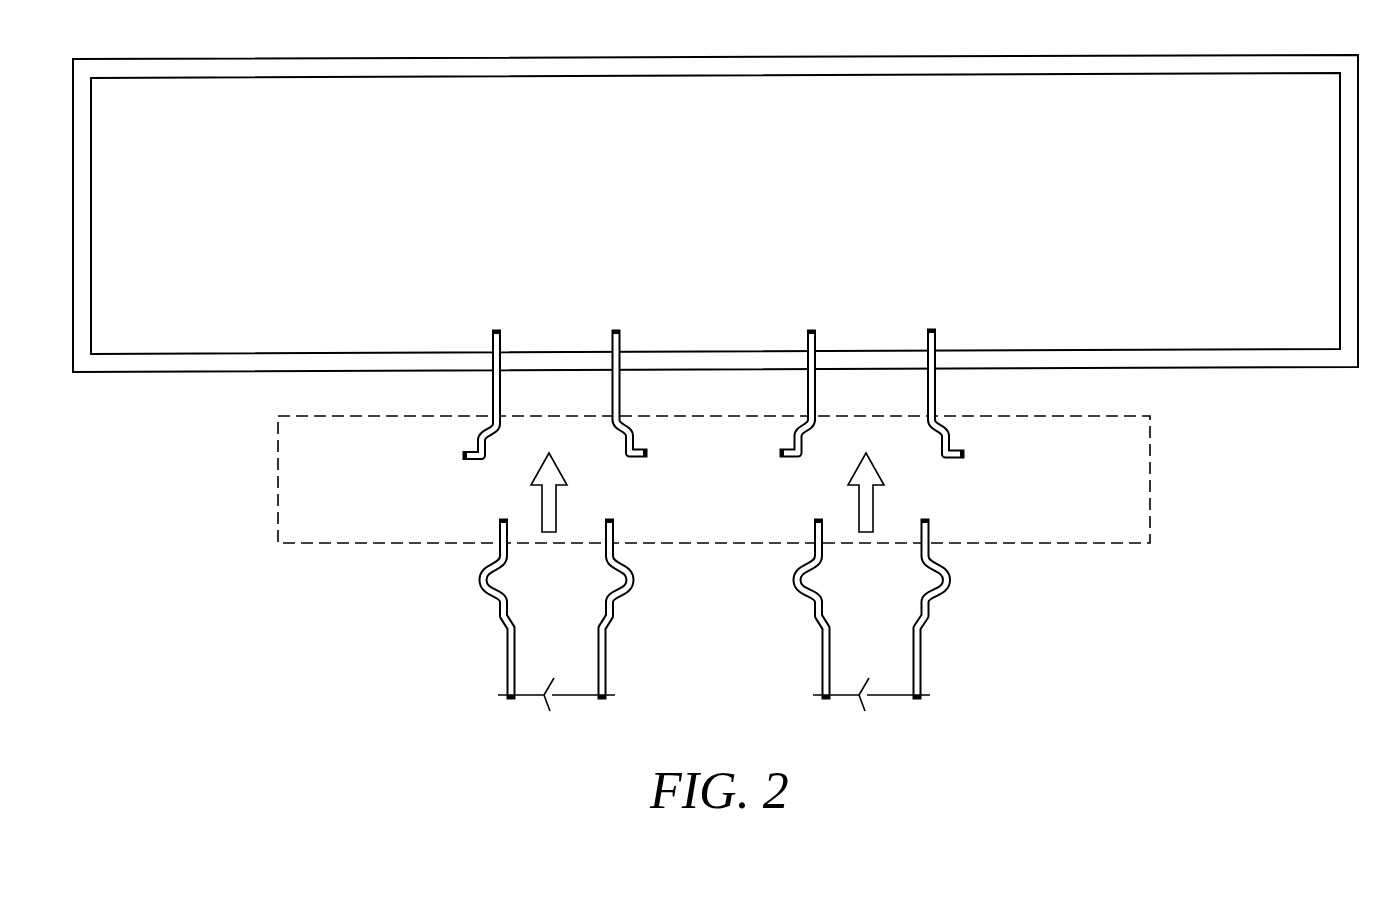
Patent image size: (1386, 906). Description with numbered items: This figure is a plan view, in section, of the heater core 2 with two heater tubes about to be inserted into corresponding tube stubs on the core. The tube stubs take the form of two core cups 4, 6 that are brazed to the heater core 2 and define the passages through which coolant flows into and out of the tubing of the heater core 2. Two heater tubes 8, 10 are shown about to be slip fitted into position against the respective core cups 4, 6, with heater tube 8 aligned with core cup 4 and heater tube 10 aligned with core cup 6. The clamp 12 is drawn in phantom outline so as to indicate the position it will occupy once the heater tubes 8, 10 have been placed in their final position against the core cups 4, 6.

The heater core 2 is at (1253, 367).
The core cup 4 is at (472, 462).
The core cup 6 is at (957, 460).
The heater tube 8 is at (506, 652).
The heater tube 10 is at (922, 650).
The clamp 12 is at (1150, 485).